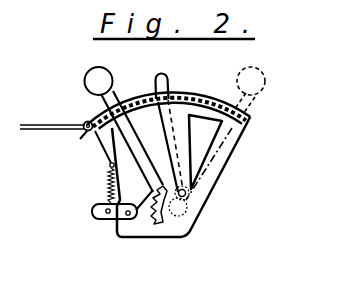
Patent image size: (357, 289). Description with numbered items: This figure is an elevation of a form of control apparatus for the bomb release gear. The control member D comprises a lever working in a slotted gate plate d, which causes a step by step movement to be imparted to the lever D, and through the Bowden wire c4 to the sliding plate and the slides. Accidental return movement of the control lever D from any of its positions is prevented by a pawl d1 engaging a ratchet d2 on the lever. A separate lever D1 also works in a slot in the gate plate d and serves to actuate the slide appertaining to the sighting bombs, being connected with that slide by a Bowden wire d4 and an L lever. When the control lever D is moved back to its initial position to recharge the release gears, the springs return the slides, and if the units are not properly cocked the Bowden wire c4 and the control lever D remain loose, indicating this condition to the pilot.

The control member D is at (114, 100).
The separate lever D1 is at (167, 82).
The slotted gate plate d is at (168, 156).
The pawl d1 is at (148, 196).
The ratchet d2 is at (156, 222).
The Bowden wire d4 is at (80, 139).
The Bowden wire c4 is at (56, 114).